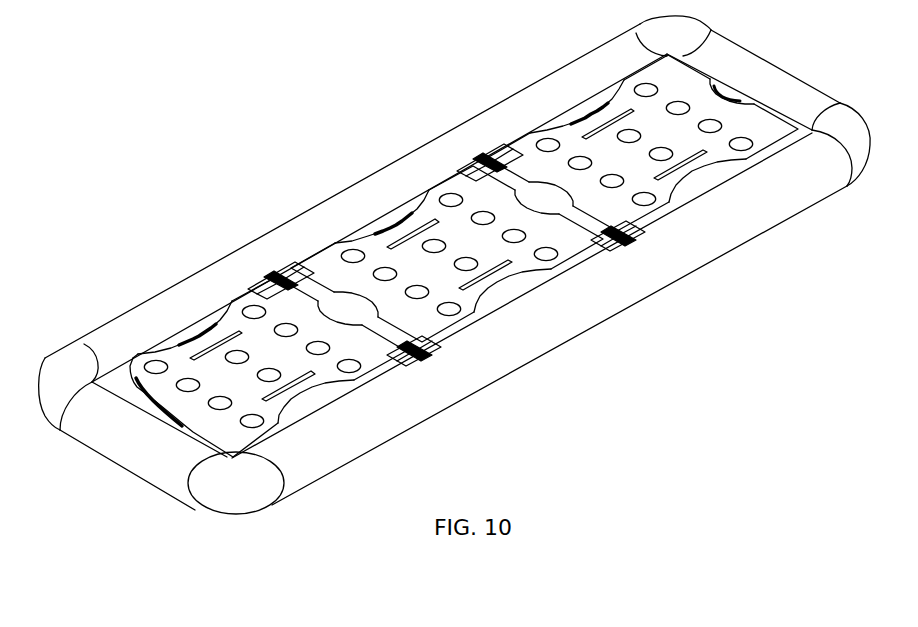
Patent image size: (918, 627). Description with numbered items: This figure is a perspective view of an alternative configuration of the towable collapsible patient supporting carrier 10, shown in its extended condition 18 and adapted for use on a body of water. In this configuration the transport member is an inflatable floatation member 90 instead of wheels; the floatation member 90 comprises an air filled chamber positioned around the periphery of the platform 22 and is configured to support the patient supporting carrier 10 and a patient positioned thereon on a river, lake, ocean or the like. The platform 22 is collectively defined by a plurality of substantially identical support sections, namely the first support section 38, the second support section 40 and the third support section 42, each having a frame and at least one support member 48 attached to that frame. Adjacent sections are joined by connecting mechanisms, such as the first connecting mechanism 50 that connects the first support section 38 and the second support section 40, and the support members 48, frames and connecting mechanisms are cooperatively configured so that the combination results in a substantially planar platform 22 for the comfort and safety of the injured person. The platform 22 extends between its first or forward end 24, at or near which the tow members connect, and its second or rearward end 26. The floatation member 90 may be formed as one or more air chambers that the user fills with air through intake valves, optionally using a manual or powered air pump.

The patient supporting carrier 10 is at (455, 293).
The extended condition 18 is at (455, 300).
The platform 22 is at (447, 323).
The first or forward end 24 is at (253, 527).
The second or rearward end 26 is at (862, 176).
The first support section 38 is at (193, 333).
The second support section 40 is at (516, 282).
The third support section 42 is at (588, 110).
The support member 48 is at (653, 116).
The first connecting mechanism 50 is at (295, 142).
The inflatable floatation member 90 is at (687, 220).